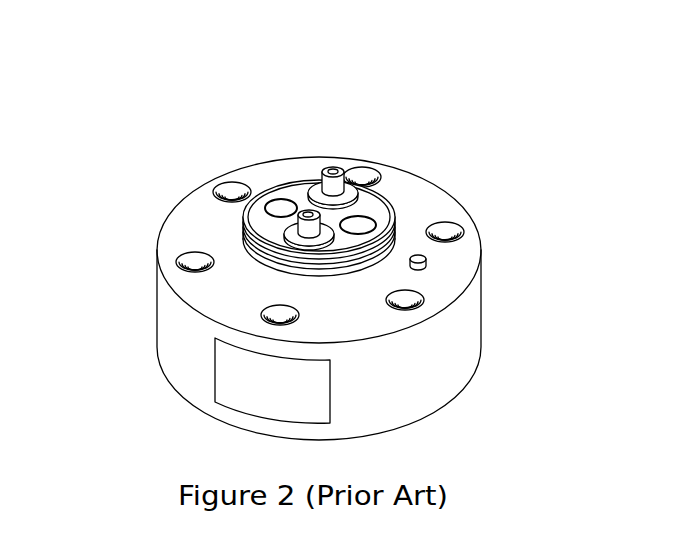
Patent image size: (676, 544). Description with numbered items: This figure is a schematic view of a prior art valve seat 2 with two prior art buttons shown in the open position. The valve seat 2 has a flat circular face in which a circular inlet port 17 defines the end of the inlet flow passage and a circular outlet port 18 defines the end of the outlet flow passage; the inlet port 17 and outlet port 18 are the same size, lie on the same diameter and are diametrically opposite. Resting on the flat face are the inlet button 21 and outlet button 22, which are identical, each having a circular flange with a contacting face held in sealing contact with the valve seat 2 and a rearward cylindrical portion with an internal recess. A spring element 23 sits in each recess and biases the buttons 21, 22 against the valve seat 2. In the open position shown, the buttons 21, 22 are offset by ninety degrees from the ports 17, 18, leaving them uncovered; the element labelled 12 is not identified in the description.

The valve seat 2 is at (462, 331).
The threaded connector boss 12 is at (400, 247).
The inlet port 17 is at (278, 208).
The outlet port 18 is at (360, 225).
The inlet button 21 is at (318, 184).
The outlet button 22 is at (306, 212).
The spring element 23 is at (333, 171).